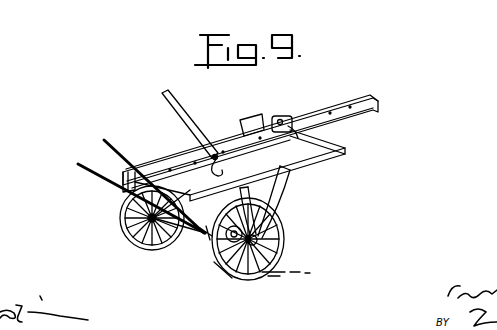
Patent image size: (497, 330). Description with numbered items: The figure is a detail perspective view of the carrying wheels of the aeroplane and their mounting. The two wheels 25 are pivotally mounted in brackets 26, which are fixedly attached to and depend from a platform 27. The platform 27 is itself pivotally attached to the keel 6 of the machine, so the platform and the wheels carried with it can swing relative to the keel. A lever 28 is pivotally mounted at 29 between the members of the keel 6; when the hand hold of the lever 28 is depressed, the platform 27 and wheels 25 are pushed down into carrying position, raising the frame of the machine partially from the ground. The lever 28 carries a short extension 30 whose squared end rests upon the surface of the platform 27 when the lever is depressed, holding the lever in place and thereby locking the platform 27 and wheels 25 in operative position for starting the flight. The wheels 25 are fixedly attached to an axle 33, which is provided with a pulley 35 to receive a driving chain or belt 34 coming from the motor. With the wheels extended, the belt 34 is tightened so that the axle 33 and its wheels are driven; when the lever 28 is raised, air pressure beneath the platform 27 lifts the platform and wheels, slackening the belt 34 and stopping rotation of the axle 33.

The keel 6 is at (123, 174).
The wheels 25 is at (122, 230).
The brackets 26 is at (282, 192).
The platform 27 is at (309, 160).
The lever 28 is at (192, 122).
The pivot 29 is at (222, 158).
The short extension 30 is at (221, 173).
The axle 33 is at (207, 238).
The driving chain or belt 34 is at (105, 144).
The pulley 35 is at (216, 266).